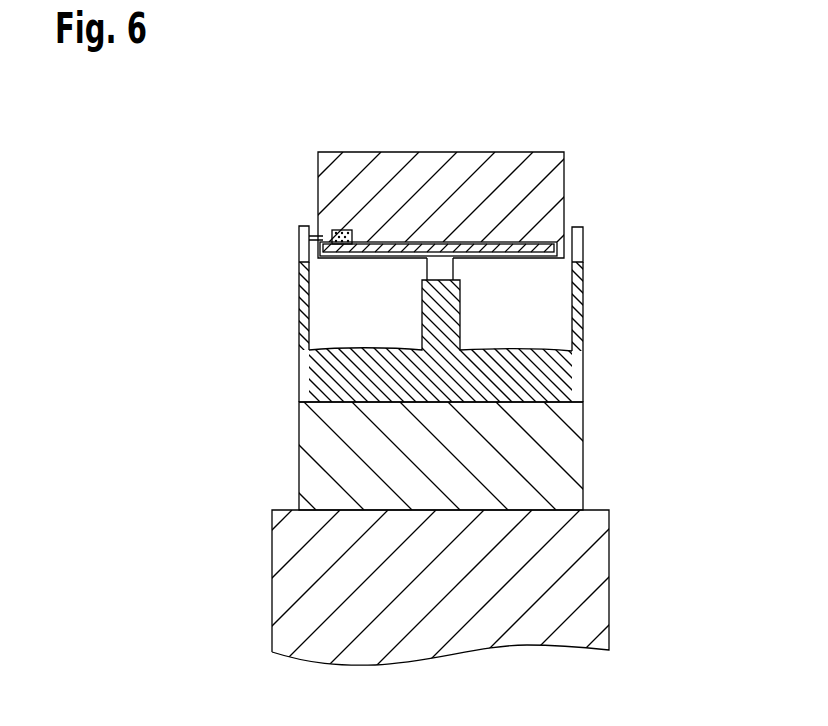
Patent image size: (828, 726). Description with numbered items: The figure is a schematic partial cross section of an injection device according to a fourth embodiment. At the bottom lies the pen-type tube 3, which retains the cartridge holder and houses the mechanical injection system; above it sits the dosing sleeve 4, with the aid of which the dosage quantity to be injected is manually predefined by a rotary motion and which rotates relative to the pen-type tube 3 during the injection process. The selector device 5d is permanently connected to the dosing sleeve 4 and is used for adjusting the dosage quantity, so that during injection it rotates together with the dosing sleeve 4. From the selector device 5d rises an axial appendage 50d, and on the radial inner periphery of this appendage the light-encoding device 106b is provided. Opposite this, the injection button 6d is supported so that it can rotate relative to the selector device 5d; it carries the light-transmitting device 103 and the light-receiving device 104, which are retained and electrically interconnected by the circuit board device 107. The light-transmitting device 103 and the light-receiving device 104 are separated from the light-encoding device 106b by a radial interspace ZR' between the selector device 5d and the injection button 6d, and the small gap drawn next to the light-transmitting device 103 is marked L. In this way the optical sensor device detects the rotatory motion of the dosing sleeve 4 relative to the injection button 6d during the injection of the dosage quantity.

The injection button 6d is at (505, 162).
The light-transmitting device 103 is at (334, 230).
The gap length L is at (314, 235).
The light-encoding device 106b is at (298, 237).
The light-receiving device 104 is at (323, 247).
The circuit board device 107 is at (347, 258).
The selector device 5d is at (298, 372).
The dosing sleeve 4 is at (310, 471).
The pen-type tube 3 is at (297, 595).
The radial interspace ZR' is at (621, 217).
The axial appendage 50d is at (583, 322).